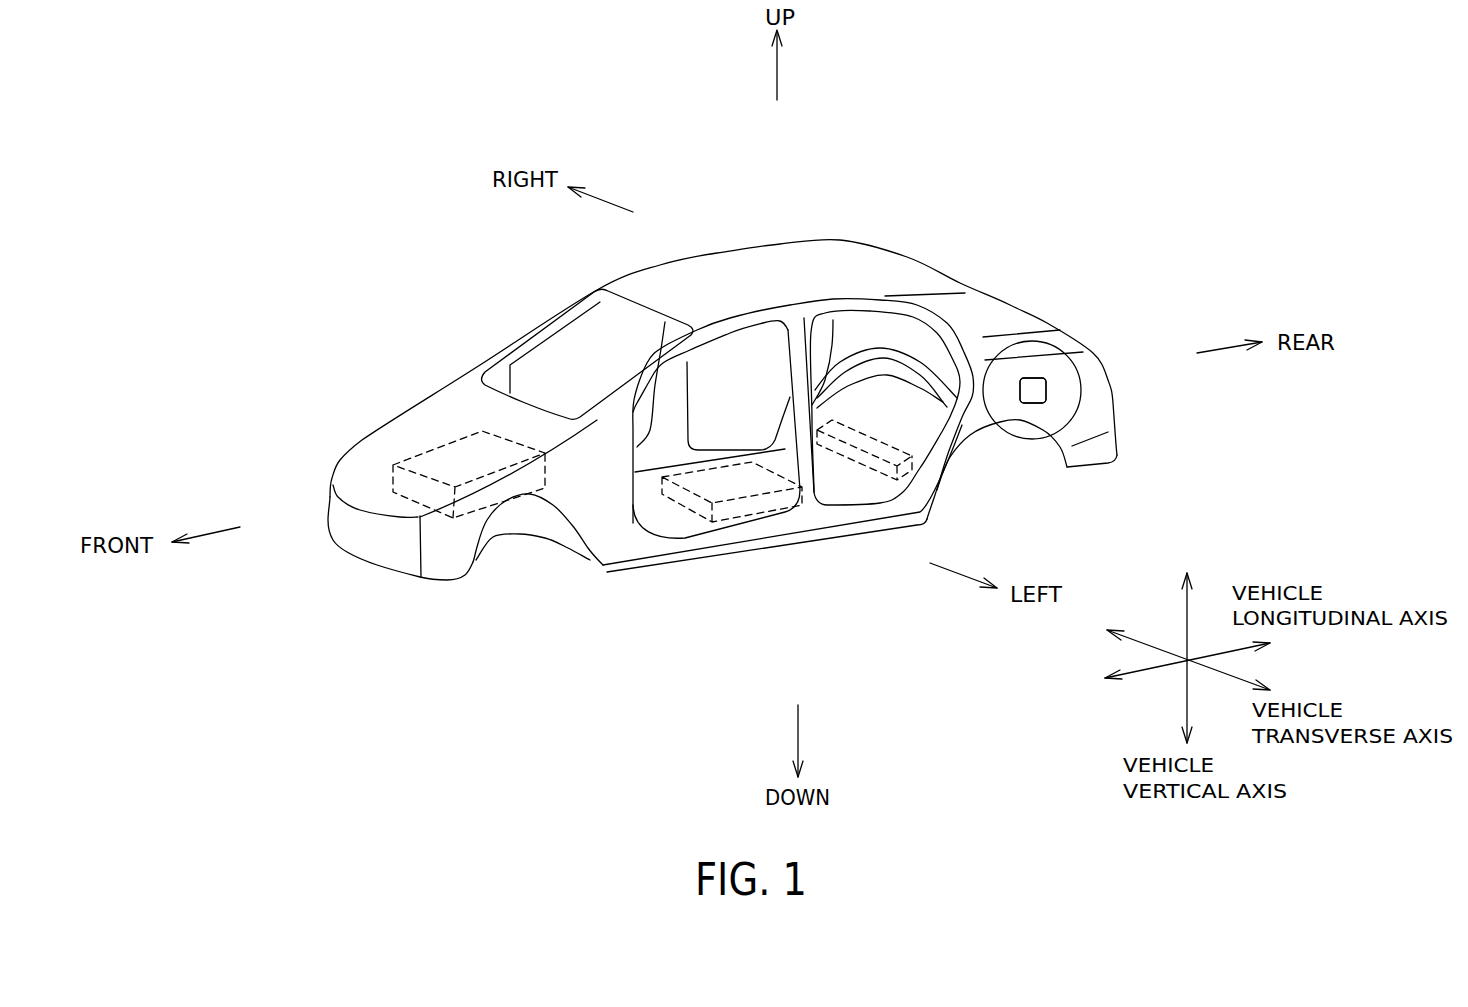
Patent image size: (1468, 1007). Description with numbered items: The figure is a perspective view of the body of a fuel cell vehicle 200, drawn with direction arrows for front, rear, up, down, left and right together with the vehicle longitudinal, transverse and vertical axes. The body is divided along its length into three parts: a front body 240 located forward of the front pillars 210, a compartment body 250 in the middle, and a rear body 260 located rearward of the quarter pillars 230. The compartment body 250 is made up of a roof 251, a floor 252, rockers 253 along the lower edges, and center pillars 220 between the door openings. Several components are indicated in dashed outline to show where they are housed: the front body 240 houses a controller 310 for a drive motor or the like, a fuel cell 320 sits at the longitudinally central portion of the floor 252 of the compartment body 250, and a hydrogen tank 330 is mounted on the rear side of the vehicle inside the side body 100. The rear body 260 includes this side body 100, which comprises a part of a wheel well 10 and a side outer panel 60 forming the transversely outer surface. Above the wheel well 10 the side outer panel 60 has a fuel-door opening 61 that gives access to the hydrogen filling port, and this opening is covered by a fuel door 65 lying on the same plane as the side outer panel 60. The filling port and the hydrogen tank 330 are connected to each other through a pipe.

The fuel cell vehicle 200 is at (292, 192).
The wheel well 10 is at (972, 453).
The front pillars 210 is at (537, 320).
The center pillars 220 is at (808, 464).
The quarter pillars 230 is at (966, 323).
The front body 240 is at (357, 438).
The compartment body 250 is at (770, 263).
The roof 251 is at (817, 273).
The floor 252 is at (703, 549).
The rockers 253 is at (745, 553).
The rear body 260 is at (1113, 410).
The side body 100 is at (1083, 385).
The side outer panel 60 is at (995, 382).
The fuel-door opening 61 is at (1038, 377).
The fuel door 65 is at (1038, 377).
The controller 310 is at (392, 484).
The fuel cell 320 is at (668, 514).
The hydrogen tank 330 is at (875, 477).